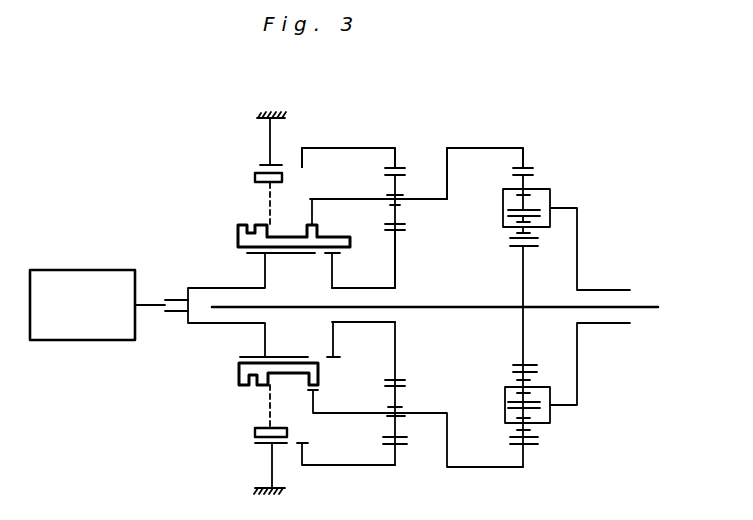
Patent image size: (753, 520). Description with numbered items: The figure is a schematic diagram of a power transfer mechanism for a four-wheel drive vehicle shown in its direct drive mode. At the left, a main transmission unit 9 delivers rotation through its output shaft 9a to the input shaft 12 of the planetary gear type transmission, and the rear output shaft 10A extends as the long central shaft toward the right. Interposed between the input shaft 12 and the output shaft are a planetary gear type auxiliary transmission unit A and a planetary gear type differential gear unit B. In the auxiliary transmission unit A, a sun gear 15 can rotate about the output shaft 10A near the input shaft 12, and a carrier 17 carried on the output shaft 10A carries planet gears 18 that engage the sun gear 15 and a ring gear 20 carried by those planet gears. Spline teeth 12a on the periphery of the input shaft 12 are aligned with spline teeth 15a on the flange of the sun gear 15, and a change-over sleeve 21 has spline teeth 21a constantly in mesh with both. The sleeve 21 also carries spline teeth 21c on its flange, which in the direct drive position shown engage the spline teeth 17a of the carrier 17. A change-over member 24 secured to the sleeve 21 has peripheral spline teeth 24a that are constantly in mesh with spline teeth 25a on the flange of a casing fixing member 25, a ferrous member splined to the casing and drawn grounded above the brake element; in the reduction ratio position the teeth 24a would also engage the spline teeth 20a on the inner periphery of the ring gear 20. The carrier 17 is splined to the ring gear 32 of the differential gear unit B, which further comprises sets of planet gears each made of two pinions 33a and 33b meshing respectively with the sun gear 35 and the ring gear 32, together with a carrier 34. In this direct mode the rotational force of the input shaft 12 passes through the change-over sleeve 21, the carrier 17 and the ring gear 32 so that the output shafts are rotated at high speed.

The main transmission unit 9 is at (53, 270).
The output shaft of the main transmission unit 9a is at (150, 310).
The rear output shaft 10A is at (651, 306).
The input shaft 12 is at (188, 290).
The spline teeth 12a is at (294, 255).
The sun gear 15 is at (398, 280).
The spline teeth 15a is at (338, 254).
The carrier 17 is at (445, 200).
The spline teeth 17a is at (312, 218).
The planet gears 18 is at (397, 188).
The ring gear 20 is at (399, 147).
The spline teeth 20a is at (302, 167).
The change-over sleeve 21 is at (240, 228).
The spline teeth 21a is at (250, 252).
The spline teeth 21c is at (318, 226).
The change-over member 24 is at (255, 179).
The spline teeth 24a is at (283, 177).
The casing fixing member 25 is at (257, 117).
The spline teeth 25a is at (260, 164).
The ring gear 32 is at (524, 162).
The pinion 33a is at (515, 232).
The pinion 33b is at (533, 180).
The carrier 34 is at (577, 255).
The sun gear 35 is at (521, 281).
The auxiliary transmission unit A is at (369, 146).
The differential gear unit B is at (518, 146).